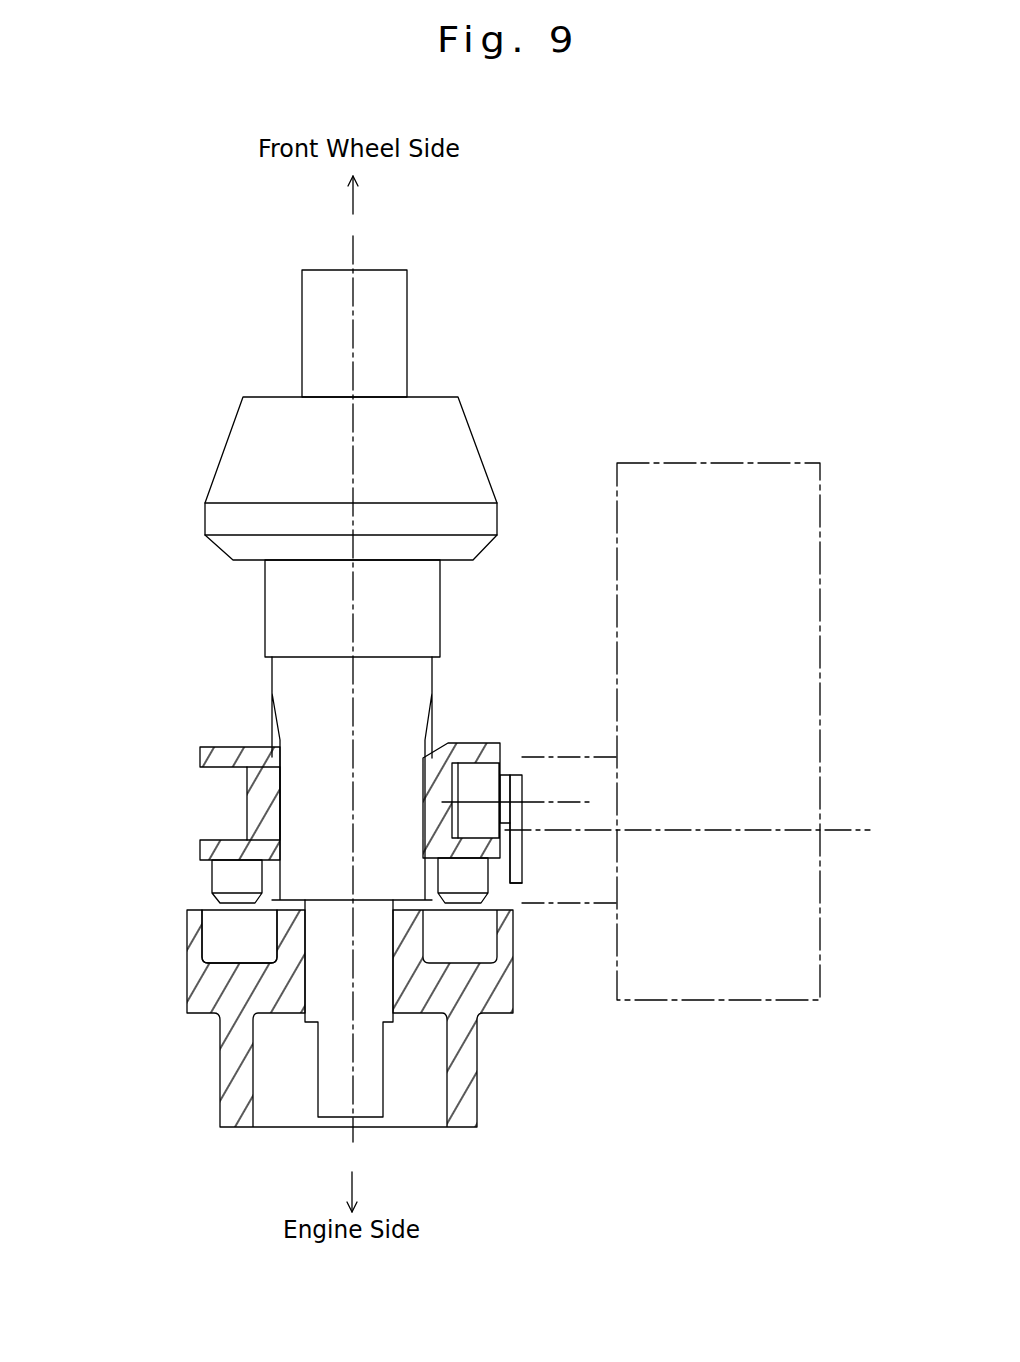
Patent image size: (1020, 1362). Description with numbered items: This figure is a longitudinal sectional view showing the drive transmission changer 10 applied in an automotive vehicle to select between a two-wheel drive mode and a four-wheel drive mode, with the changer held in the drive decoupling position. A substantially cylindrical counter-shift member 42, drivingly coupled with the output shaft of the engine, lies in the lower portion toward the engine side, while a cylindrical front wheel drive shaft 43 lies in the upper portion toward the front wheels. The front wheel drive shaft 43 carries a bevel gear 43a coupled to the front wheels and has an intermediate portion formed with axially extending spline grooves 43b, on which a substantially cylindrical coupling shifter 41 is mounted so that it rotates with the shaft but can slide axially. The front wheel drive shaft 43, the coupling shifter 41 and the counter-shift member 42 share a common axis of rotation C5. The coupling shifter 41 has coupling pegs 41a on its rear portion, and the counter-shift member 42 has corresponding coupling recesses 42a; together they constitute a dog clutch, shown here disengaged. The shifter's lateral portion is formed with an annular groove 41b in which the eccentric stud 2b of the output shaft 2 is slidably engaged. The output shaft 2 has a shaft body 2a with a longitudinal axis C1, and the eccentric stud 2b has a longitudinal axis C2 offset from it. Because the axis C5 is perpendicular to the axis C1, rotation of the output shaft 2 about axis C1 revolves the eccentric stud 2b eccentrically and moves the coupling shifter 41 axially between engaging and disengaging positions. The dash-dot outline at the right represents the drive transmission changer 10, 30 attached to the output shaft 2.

The output shaft 2 is at (515, 770).
The shaft body 2a is at (512, 883).
The eccentric stud 2b is at (465, 743).
The drive transmission changer 10 is at (722, 436).
The detected member 30 is at (718, 642).
The coupling shifter 41 is at (262, 748).
The coupling pegs 41a is at (212, 879).
The annular groove 41b is at (210, 806).
The counter-shift member 42 is at (187, 990).
The coupling recesses 42a is at (237, 933).
The front wheel drive shaft 43 is at (265, 610).
The bevel gear 43a is at (220, 460).
The spline grooves 43b is at (270, 742).
The longitudinal axis of the shaft body C1 is at (572, 832).
The longitudinal axis of the eccentric stud C2 is at (573, 800).
The common axis of rotation C5 is at (350, 322).